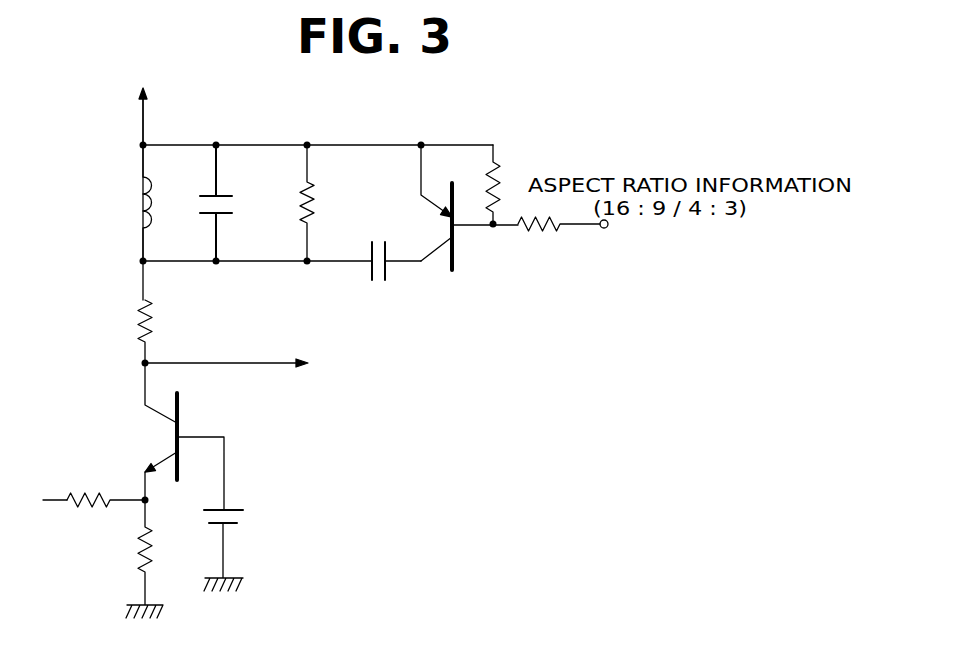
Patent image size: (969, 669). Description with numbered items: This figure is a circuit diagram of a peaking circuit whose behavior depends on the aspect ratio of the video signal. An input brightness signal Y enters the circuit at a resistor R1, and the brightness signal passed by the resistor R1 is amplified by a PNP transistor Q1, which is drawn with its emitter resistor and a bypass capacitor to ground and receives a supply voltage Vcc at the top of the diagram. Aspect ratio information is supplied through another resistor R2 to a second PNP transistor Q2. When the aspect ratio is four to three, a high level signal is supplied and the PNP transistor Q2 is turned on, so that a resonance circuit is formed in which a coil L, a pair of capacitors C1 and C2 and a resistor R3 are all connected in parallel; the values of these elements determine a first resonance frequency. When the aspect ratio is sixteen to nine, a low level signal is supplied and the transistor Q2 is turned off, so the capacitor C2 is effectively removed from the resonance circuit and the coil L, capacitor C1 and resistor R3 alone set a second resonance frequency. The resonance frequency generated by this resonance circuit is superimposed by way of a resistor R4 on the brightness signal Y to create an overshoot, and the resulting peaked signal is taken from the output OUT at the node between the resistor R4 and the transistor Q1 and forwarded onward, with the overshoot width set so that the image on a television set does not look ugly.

The coil L is at (132, 203).
The capacitor C1 is at (235, 203).
The resistor R3 is at (328, 203).
The capacitor C2 is at (379, 277).
The PNP transistor Q2 is at (456, 257).
The resistor R2 is at (563, 240).
The resistor R4 is at (168, 331).
The PNP transistor Q1 is at (160, 440).
The resistor R1 is at (87, 512).
The input brightness signal Y is at (42, 501).
The supply voltage Vcc is at (169, 117).
The output terminal OUT is at (244, 349).